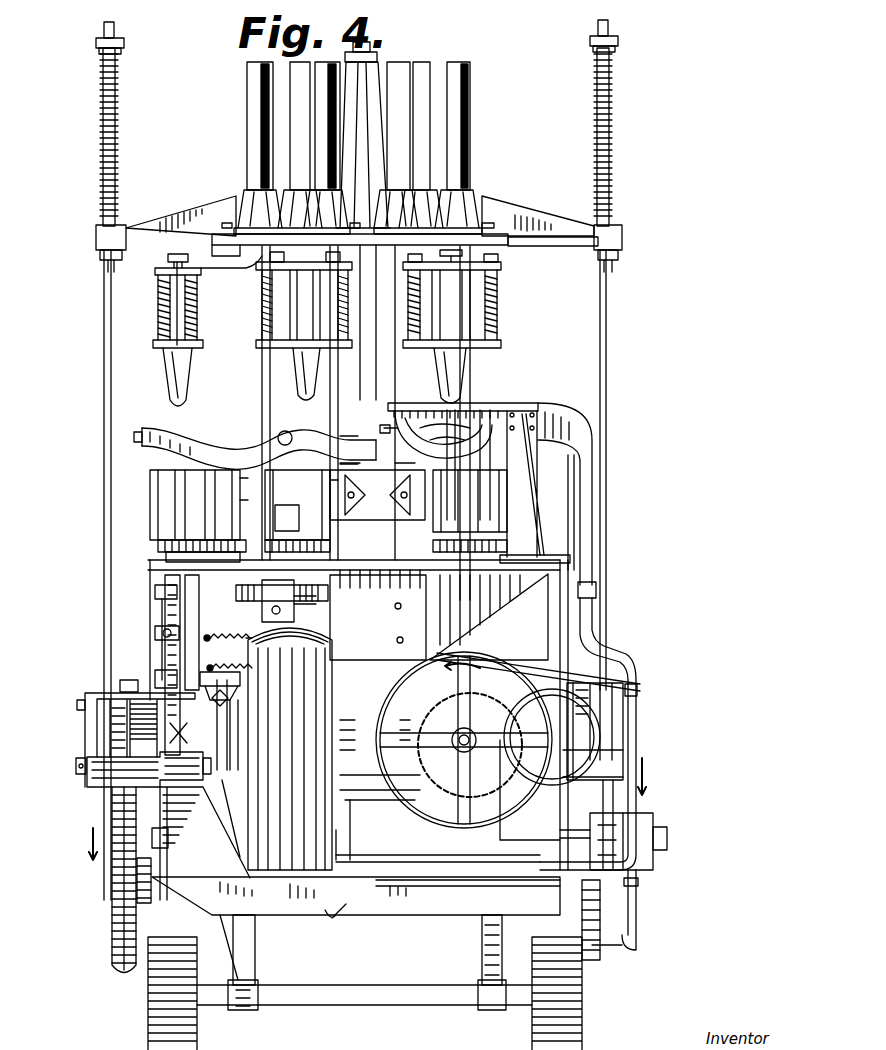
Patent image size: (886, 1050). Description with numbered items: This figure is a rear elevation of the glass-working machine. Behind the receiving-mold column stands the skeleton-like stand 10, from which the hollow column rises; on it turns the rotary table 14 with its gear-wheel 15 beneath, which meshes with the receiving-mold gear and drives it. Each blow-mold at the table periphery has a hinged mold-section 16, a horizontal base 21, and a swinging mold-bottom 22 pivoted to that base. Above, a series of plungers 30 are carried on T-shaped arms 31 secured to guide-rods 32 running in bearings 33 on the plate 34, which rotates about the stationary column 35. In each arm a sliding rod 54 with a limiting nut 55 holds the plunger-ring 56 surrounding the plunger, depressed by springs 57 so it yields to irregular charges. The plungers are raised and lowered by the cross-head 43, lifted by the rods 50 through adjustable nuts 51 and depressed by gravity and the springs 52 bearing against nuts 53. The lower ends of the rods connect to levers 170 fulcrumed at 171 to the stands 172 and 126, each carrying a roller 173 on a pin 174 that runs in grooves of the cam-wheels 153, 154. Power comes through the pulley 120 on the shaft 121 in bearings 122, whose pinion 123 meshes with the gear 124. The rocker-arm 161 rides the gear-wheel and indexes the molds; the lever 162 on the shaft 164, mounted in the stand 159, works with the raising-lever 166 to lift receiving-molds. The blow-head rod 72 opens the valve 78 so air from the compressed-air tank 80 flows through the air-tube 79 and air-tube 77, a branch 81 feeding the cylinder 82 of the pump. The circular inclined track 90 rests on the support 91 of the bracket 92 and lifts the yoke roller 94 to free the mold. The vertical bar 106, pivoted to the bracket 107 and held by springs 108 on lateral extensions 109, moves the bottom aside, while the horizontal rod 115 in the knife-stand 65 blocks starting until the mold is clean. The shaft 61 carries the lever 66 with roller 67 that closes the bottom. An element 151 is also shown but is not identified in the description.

The stand 10 is at (444, 848).
The rotary table 14 is at (377, 491).
The gear-wheel 15 is at (244, 585).
The mold-section 16 is at (175, 496).
The horizontal base 21 is at (176, 562).
The mold-bottom 22 is at (158, 544).
The plunger 30 is at (188, 368).
The arm 31 is at (228, 268).
The guide-rod 32 is at (247, 120).
The bearing 33 is at (474, 196).
The plate 34 is at (498, 239).
The stationary column 35 is at (380, 56).
The cross-head 43 is at (514, 206).
The rod 50 is at (104, 342).
The adjustable nut 51 is at (96, 246).
The spring 52 is at (103, 96).
The nut 53 is at (96, 42).
The sliding rod 54 is at (498, 285).
The nut 55 is at (500, 261).
The plunger-ring 56 is at (501, 342).
The spring 57 is at (498, 308).
The shaft 61 is at (160, 646).
The knife-stand 65 is at (160, 634).
The lever 66 is at (160, 674).
The roller 67 is at (124, 686).
The rod 72 is at (582, 512).
The air-tube 77 is at (592, 468).
The valve 78 is at (596, 588).
The air-tube 79 is at (592, 636).
The compressed-air tank 80 is at (290, 749).
The branch 81 is at (618, 950).
The cylinder 82 is at (482, 933).
The track 90 is at (533, 408).
The support 91 is at (532, 498).
The bracket 92 is at (498, 614).
The roller 94 is at (134, 436).
The vertical bar 106 is at (185, 594).
The bracket 107 is at (224, 666).
The spring 108 is at (228, 644).
The lateral extension 109 is at (200, 638).
The horizontal rod 115 is at (210, 666).
The pulley 120 is at (528, 820).
The shaft 121 is at (452, 730).
The bearing 122 is at (454, 788).
The pinion 123 is at (495, 778).
The gear 124 is at (528, 702).
The stand 126 is at (526, 794).
The strut 151 is at (170, 838).
The cam-wheel 153 is at (112, 890).
The cam-wheel 154 is at (600, 960).
The stand 159 is at (196, 718).
The rocker-arm 161 is at (266, 608).
The lever 162 is at (653, 818).
The shaft 164 is at (667, 840).
The raising-lever 166 is at (350, 826).
The lever 170 is at (87, 746).
The fulcrum 171 is at (76, 772).
The stand 172 is at (356, 880).
The roller 173 is at (142, 903).
The pin 174 is at (77, 694).